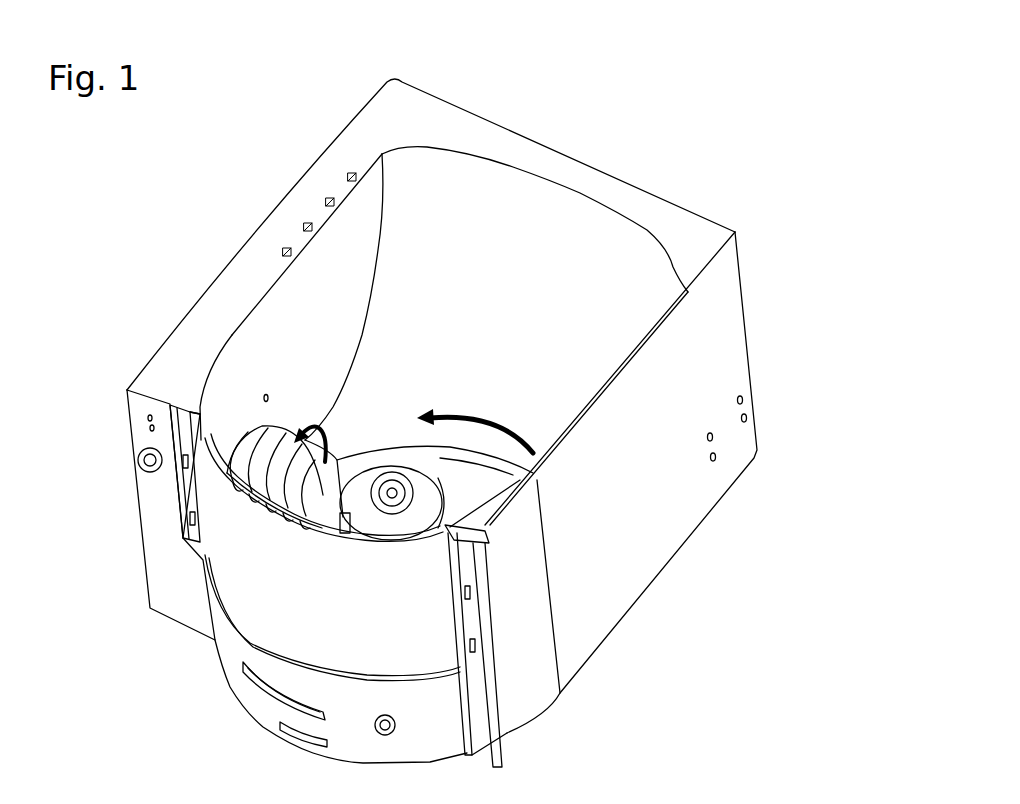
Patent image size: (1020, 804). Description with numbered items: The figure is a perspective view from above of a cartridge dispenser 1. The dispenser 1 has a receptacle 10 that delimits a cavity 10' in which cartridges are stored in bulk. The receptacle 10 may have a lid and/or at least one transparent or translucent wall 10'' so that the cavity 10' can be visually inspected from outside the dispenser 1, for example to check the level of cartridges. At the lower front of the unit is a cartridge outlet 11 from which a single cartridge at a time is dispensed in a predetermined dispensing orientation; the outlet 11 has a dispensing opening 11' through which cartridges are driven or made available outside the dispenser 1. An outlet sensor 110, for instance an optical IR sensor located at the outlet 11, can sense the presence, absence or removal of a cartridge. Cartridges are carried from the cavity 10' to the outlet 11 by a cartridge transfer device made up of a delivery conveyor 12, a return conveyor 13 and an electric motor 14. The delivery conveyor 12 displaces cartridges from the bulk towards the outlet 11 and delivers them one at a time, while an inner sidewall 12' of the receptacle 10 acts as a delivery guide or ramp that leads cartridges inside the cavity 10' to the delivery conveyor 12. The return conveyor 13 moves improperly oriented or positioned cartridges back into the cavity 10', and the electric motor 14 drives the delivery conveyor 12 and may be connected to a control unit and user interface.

The cartridge dispenser 1 is at (770, 130).
The receptacle 10 is at (431, 395).
The cavity 10' is at (367, 232).
The transparent or translucent wall 10'' is at (301, 549).
The cartridge outlet 11 is at (256, 657).
The dispensing opening 11' is at (570, 723).
The outlet sensor 110 is at (300, 732).
The delivery conveyor 12 is at (554, 458).
The inner sidewall 12' is at (535, 164).
The return conveyor 13 is at (256, 431).
The electric motor 14 is at (410, 490).